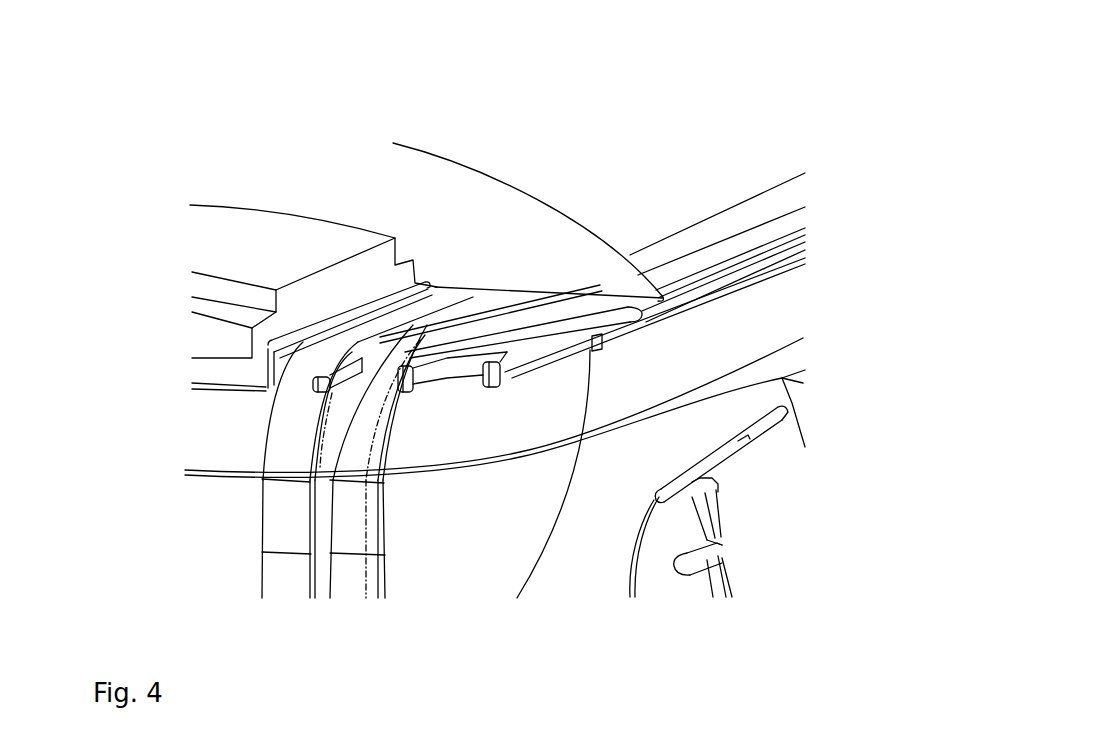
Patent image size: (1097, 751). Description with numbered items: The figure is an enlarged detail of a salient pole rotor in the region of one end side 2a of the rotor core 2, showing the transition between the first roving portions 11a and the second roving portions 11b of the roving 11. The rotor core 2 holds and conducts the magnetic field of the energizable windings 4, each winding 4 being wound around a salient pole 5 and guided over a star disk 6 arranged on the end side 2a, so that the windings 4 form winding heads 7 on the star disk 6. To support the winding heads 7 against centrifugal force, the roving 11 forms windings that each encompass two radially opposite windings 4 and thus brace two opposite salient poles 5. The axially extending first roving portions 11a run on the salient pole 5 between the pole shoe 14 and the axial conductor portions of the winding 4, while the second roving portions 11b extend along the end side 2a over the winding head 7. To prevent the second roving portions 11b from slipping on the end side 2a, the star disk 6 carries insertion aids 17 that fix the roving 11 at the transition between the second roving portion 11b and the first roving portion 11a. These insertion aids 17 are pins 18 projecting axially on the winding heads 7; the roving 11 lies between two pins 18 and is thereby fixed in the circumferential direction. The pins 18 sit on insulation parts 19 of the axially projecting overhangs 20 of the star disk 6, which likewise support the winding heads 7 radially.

The rotor core 2 is at (464, 167).
The end side 2a is at (549, 243).
The winding 4 is at (650, 387).
The salient pole 5 is at (650, 168).
The star disk 6 is at (248, 256).
The winding head 7 is at (456, 501).
The roving 11 is at (492, 318).
The first roving portion 11a is at (435, 330).
The second roving portion 11b is at (353, 525).
The pole shoe 14 is at (640, 267).
The insertion aid 17 is at (474, 381).
The pin 18 is at (410, 380).
The insulation part 19 is at (540, 327).
The overhang 20 is at (223, 372).